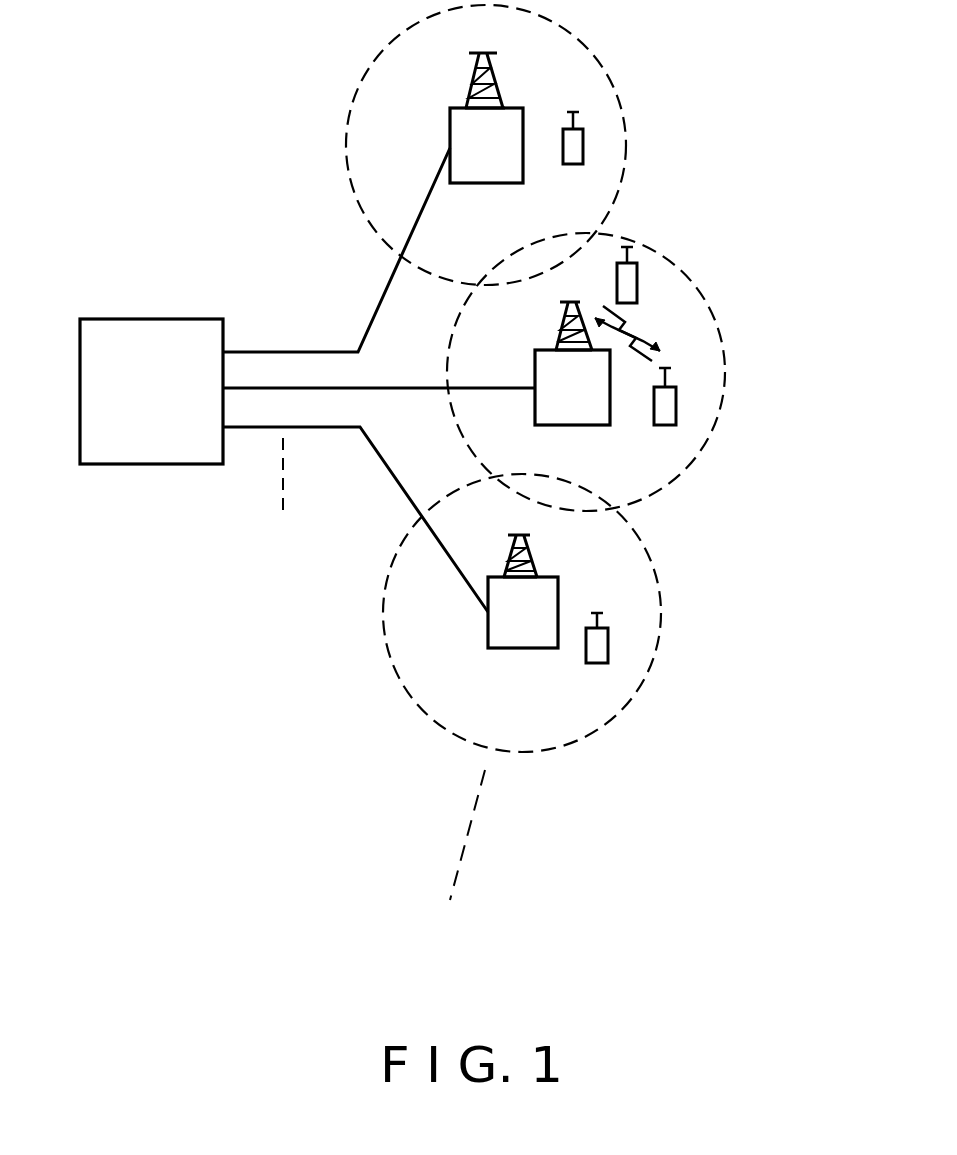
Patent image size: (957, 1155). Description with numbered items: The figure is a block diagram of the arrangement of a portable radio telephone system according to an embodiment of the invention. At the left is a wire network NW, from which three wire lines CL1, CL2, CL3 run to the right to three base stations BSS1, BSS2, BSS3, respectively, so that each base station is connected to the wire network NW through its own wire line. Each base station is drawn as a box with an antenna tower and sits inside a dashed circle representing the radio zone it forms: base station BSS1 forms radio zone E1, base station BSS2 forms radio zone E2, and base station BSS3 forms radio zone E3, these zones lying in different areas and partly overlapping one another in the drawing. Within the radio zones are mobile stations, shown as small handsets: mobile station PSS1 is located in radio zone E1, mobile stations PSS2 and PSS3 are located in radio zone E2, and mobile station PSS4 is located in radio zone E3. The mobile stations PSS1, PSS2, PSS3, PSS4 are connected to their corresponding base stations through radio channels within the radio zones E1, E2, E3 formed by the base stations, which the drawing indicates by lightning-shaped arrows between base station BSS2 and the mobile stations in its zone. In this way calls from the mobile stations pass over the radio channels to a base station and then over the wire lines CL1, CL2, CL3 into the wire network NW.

The wire network NW is at (135, 464).
The wire line CL1 is at (292, 352).
The wire line CL2 is at (426, 387).
The wire line CL3 is at (343, 428).
The base station BSS1 is at (486, 183).
The base station BSS2 is at (570, 425).
The base station BSS3 is at (515, 648).
The mobile station PSS1 is at (583, 147).
The mobile station PSS2 is at (637, 275).
The mobile station PSS3 is at (677, 410).
The mobile station PSS4 is at (608, 640).
The radio zone E1 is at (600, 60).
The radio zone E2 is at (713, 310).
The radio zone E3 is at (641, 687).